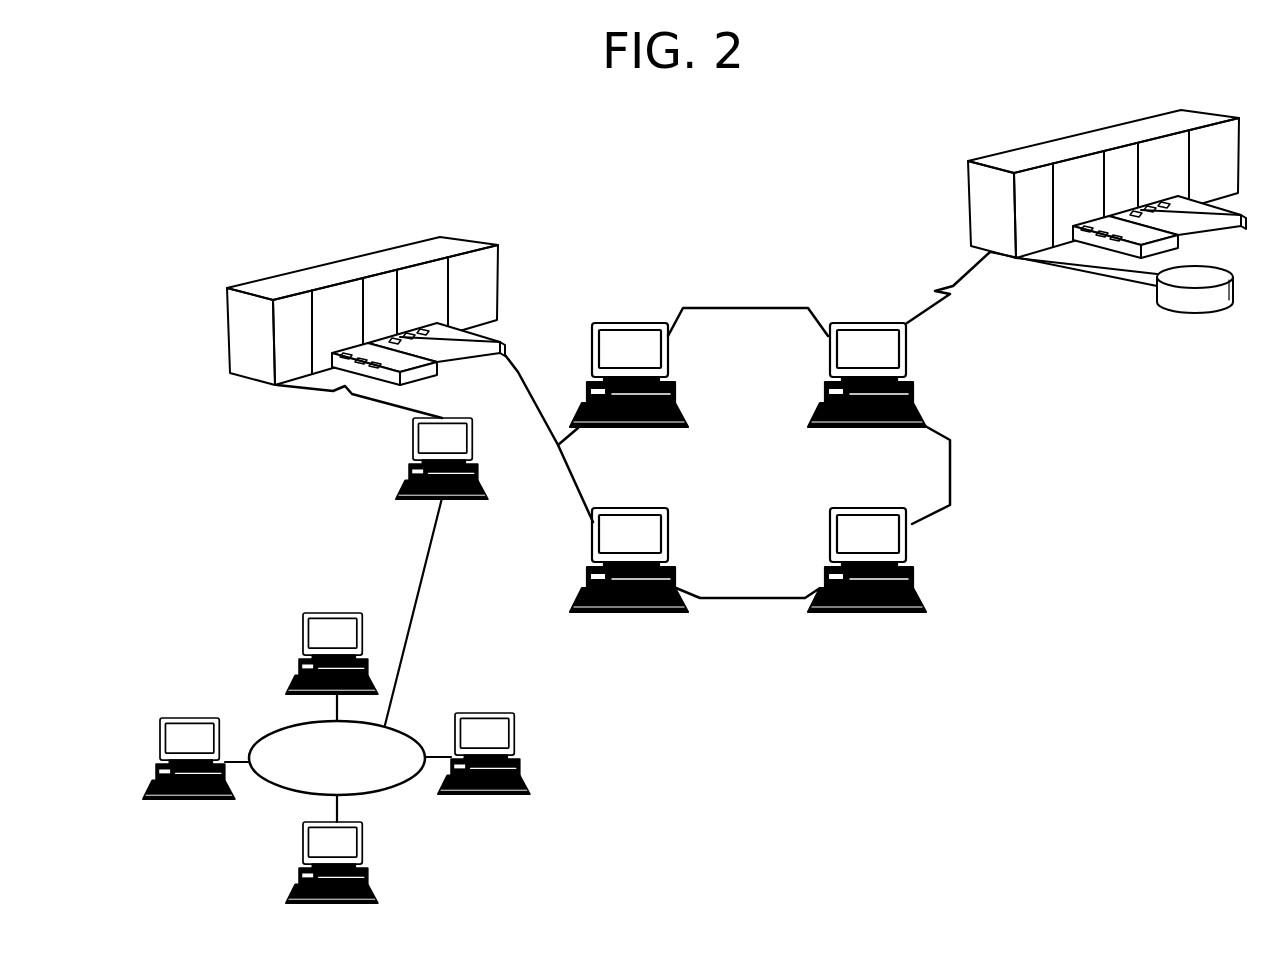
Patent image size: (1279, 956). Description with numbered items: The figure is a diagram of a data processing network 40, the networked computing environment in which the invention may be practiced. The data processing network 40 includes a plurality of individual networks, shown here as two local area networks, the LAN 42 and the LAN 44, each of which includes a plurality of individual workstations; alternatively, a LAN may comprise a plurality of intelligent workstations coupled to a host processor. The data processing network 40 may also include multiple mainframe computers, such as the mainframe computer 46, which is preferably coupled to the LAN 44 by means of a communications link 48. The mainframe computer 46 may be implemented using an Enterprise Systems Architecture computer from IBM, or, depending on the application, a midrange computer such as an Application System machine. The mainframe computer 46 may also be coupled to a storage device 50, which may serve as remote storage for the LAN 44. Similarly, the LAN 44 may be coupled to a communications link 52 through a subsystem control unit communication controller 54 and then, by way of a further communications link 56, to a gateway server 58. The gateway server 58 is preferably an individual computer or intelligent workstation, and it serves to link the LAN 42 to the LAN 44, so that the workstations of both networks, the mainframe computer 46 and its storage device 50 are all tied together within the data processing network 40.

The data processing network 40 is at (756, 286).
The LAN 42 is at (428, 845).
The LAN 44 is at (809, 453).
The mainframe computer 46 is at (1030, 145).
The communications link 48 is at (958, 270).
The storage device 50 is at (1235, 284).
The communications link 52 is at (530, 388).
The subsystem control unit communication controller 54 is at (367, 253).
The communications link 56 is at (340, 391).
The gateway server 58 is at (473, 432).